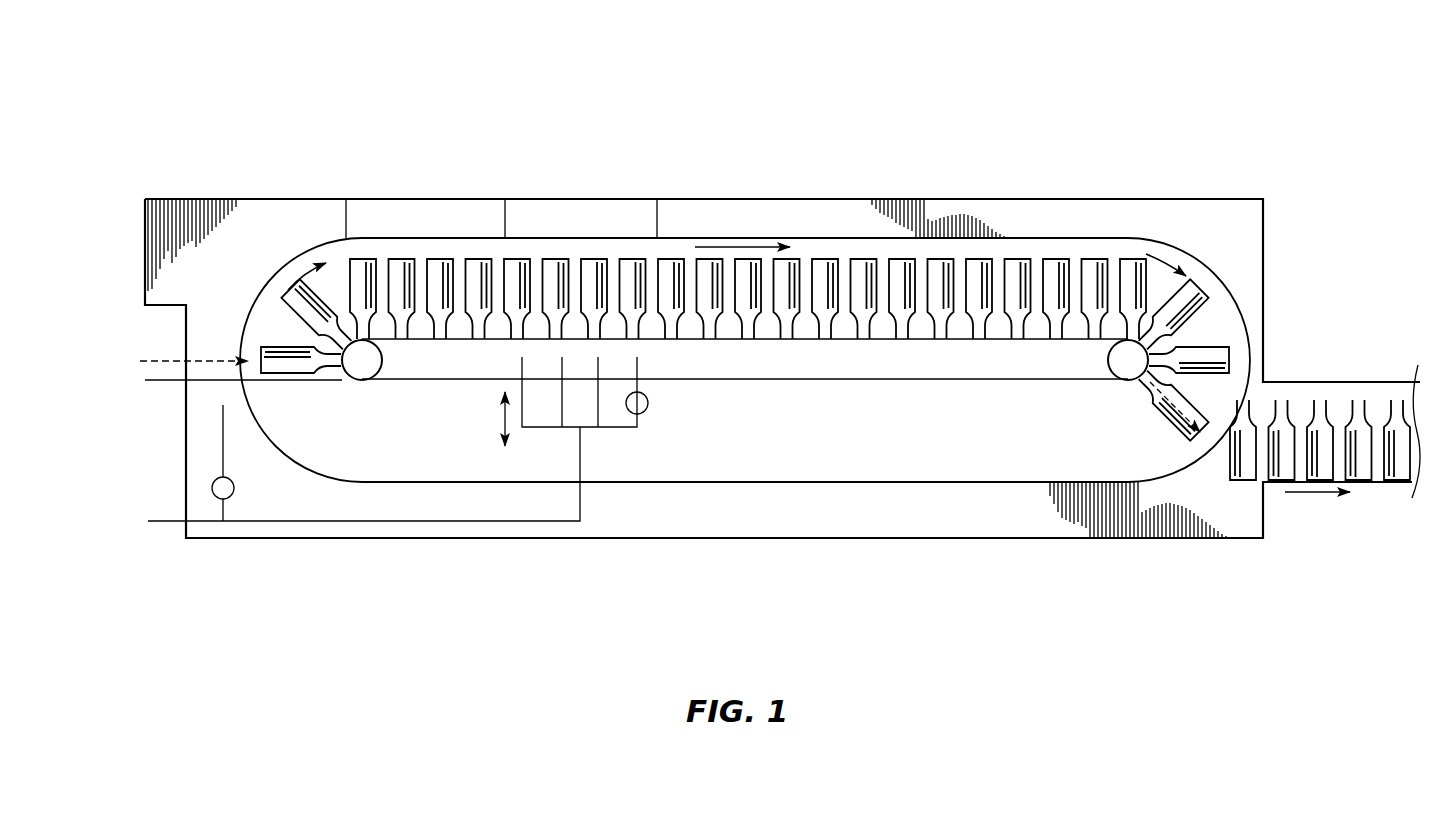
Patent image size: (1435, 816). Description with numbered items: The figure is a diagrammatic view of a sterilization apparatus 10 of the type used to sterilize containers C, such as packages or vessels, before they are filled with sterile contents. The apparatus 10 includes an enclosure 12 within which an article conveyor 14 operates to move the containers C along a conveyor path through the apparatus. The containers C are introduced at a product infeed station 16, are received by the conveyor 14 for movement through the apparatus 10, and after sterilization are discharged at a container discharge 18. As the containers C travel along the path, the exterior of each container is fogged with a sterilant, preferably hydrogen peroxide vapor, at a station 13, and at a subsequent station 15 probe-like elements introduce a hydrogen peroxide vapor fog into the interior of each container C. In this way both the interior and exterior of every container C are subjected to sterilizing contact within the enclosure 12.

The sterilization apparatus 10 is at (1022, 126).
The enclosure 12 is at (1078, 196).
The station 13 is at (218, 314).
The article conveyor 14 is at (832, 381).
The station 15 is at (594, 228).
The product infeed station 16 is at (133, 368).
The container discharge 18 is at (1316, 502).
The containers c is at (399, 260).